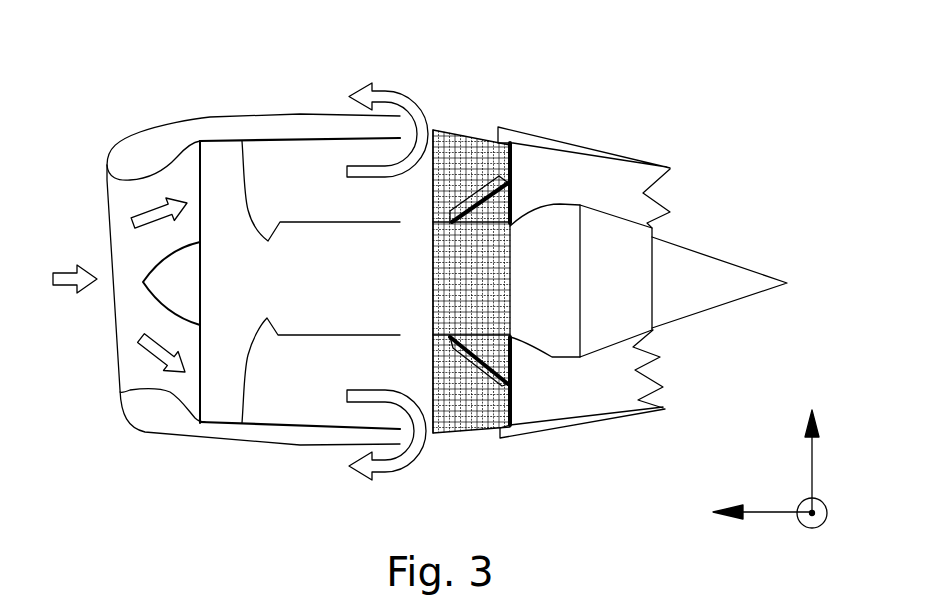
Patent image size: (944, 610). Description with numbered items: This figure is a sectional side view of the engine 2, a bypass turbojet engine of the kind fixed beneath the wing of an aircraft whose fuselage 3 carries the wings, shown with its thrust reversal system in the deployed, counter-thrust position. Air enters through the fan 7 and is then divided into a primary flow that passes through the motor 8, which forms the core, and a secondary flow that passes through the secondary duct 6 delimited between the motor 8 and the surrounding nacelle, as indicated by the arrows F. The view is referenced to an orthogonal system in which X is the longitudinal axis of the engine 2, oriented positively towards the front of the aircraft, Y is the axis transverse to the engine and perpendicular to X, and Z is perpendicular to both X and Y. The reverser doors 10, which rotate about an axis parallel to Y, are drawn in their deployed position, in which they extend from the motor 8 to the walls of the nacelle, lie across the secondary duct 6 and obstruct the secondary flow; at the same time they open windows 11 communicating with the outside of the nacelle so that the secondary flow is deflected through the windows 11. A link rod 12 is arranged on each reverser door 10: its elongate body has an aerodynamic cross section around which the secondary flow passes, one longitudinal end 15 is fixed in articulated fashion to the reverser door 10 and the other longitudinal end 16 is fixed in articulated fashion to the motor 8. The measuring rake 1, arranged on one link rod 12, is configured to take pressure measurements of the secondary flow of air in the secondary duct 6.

The measuring rake 1 is at (477, 193).
The engine 2 is at (66, 98).
The fuselage 3 is at (233, 128).
The secondary duct 6 is at (310, 170).
The fan 7 is at (233, 260).
The motor 8 is at (513, 225).
The reverser doors 10 is at (513, 177).
The windows 11 is at (421, 104).
The link rod 12 is at (500, 182).
The longitudinal end 15 is at (500, 162).
The longitudinal end 16 is at (452, 217).
The arrows F is at (350, 93).
The longitudinal axis X is at (765, 512).
The transverse axis Y is at (827, 500).
The axis Z is at (815, 450).